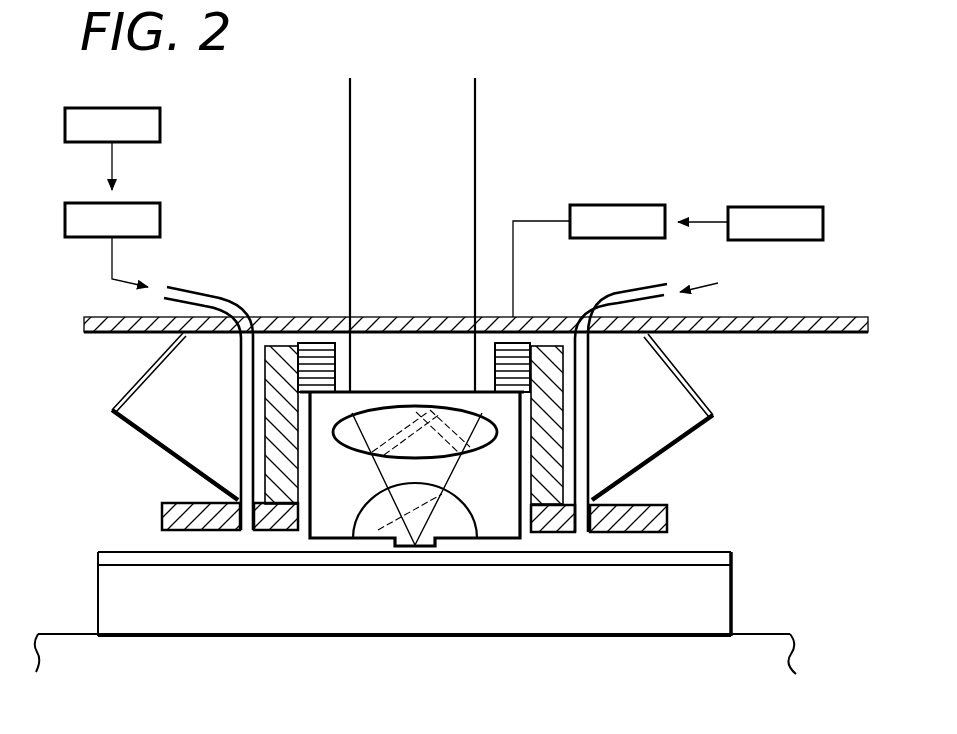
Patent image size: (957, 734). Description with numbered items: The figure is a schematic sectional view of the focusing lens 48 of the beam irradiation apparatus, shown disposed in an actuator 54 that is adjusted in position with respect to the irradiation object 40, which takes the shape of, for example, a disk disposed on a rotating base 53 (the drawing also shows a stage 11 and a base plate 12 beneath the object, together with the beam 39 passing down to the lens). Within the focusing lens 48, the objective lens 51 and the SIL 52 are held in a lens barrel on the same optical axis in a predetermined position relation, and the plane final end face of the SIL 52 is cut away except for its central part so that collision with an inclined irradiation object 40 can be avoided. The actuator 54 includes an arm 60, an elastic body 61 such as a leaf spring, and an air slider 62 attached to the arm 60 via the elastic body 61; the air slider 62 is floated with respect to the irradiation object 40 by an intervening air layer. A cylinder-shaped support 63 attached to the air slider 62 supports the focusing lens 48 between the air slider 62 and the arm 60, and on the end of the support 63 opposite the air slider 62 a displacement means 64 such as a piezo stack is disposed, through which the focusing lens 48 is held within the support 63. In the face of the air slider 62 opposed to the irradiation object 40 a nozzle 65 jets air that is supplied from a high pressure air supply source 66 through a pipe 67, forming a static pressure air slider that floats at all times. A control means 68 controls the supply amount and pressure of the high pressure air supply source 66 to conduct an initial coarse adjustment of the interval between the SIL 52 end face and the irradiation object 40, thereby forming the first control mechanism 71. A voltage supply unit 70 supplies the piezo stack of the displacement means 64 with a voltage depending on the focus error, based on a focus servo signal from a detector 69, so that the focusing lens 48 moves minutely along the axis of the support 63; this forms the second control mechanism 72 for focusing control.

The stage 11 is at (718, 605).
The base plate 12 is at (733, 557).
The laser beam 39 is at (476, 110).
The irradiation object 40 is at (570, 636).
The focusing lens 48 is at (327, 516).
The objective lens 51 is at (483, 434).
The SIL 52 is at (452, 520).
The rotating base 53 is at (800, 655).
The actuator 54 is at (765, 390).
The arm 60 is at (822, 316).
The elastic body 61 is at (680, 447).
The air slider 62 is at (668, 513).
The support 63 is at (558, 424).
The displacement means 64 is at (312, 343).
The nozzle 65 is at (247, 528).
The high pressure air supply source 66 is at (160, 213).
The pipe 67 is at (243, 410).
The control means 68 is at (160, 118).
The detector 69 is at (791, 206).
The voltage supply unit 70 is at (588, 204).
The first control mechanism 71 is at (217, 377).
The second control mechanism 72 is at (429, 372).